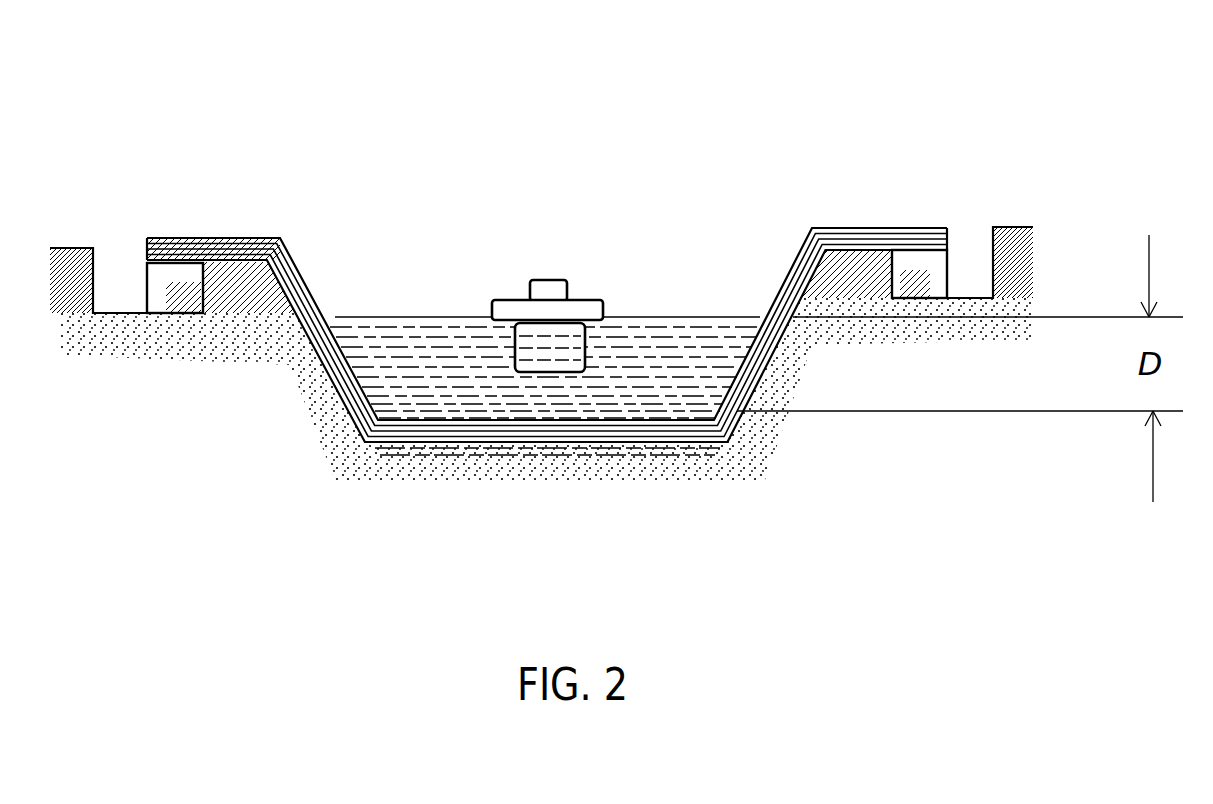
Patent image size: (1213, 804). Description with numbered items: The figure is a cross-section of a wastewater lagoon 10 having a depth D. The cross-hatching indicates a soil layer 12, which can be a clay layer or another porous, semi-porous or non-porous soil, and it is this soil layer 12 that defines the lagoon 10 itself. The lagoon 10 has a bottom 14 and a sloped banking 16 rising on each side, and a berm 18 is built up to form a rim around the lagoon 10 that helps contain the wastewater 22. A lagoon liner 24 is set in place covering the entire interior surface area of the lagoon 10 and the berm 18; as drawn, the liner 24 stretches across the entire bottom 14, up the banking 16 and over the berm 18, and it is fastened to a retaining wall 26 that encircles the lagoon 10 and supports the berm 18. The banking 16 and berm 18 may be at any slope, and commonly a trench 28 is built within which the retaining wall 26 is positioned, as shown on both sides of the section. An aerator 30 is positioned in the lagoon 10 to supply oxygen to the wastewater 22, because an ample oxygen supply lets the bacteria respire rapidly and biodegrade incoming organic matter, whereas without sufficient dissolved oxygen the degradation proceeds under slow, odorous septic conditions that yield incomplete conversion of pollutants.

The lagoon 10 is at (418, 193).
The soil layer 12 is at (277, 362).
The bottom 14 is at (578, 433).
The banking 16 is at (732, 400).
The berm 18 is at (800, 372).
The wastewater 22 is at (430, 378).
The lagoon liner 24 is at (230, 237).
The retaining wall 26 is at (165, 283).
The trench 28 is at (970, 262).
The aerator 30 is at (540, 320).